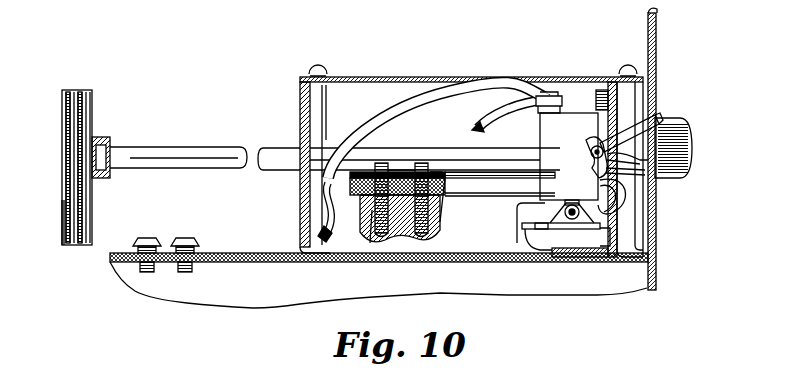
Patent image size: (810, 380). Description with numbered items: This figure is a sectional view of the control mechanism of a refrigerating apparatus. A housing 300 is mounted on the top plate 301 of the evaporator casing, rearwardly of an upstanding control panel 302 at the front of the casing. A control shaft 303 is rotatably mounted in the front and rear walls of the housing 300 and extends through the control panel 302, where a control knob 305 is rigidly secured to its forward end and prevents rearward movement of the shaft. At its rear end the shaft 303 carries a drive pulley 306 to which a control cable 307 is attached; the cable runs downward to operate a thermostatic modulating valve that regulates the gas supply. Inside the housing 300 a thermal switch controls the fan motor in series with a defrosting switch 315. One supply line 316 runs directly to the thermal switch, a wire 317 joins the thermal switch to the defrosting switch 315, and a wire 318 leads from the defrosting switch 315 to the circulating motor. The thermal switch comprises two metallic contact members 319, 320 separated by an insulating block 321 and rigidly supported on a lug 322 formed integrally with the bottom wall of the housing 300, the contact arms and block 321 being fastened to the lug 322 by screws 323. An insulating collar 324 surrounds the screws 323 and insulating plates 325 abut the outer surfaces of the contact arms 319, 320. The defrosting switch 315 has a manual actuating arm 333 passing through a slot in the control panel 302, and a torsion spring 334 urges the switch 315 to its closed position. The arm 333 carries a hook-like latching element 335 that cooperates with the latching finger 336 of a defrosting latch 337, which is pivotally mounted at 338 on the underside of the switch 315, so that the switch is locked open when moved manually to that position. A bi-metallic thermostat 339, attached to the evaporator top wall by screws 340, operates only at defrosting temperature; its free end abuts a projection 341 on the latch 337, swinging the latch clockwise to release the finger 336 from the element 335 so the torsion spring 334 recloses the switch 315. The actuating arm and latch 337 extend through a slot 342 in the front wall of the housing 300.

The housing 300 is at (300, 97).
The top plate 301 is at (277, 262).
The control panel 302 is at (656, 42).
The control shaft 303 is at (145, 150).
The control knob 305 is at (692, 143).
The drive pulley 306 is at (88, 106).
The control cable 307 is at (68, 242).
The defrosting switch 315 is at (574, 145).
The supply line 316 is at (325, 228).
The wire 317 is at (452, 92).
The wire 318 is at (482, 121).
The contact member 319 is at (483, 192).
The contact member 320 is at (493, 172).
The insulating block 321 is at (350, 182).
The lug 322 is at (407, 240).
The screws 323 is at (380, 163).
The insulating collar 324 is at (440, 224).
The insulating plates 325 is at (430, 168).
The manual actuating arm 333 is at (670, 124).
The torsion spring 334 is at (590, 141).
The hook-like latching element 335 is at (650, 160).
The latching finger 336 is at (625, 188).
The defrosting latch 337 is at (573, 229).
The pivot 338 is at (560, 186).
The bi-metallic thermostat 339 is at (205, 255).
The screws 340 is at (185, 240).
The projection 341 is at (538, 232).
The slot 342 is at (615, 172).